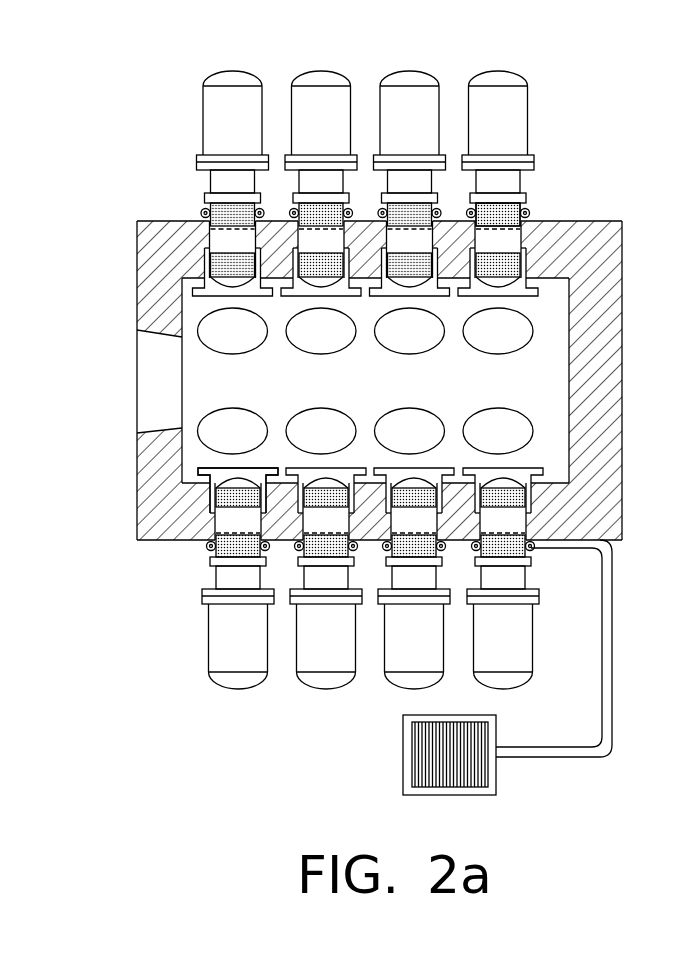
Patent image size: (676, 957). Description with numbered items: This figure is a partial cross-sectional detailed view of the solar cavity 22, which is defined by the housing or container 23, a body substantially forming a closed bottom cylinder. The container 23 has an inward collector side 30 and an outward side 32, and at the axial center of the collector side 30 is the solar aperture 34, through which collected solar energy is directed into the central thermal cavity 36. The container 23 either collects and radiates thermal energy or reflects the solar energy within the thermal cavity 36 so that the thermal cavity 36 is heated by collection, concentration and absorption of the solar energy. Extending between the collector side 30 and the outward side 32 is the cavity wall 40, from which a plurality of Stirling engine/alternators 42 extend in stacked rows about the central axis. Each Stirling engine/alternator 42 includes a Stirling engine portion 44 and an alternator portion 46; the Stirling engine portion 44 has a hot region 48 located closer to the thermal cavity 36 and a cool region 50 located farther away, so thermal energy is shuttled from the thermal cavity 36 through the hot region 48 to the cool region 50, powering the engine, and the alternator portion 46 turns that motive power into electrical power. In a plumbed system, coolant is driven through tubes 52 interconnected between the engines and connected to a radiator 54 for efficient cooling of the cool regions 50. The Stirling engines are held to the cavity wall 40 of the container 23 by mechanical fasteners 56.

The cavity 22 is at (337, 347).
The container 23 is at (563, 237).
The collector side 30 is at (137, 274).
The outward side 32 is at (622, 218).
The solar aperture 34 is at (164, 432).
The thermal cavity 36 is at (314, 396).
The cavity wall 40 is at (176, 235).
The Stirling engine/alternator 42 is at (183, 81).
The Stirling engine portion 44 is at (539, 185).
The alternator portion 46 is at (351, 100).
The hot region 48 is at (405, 263).
The cool region 50 is at (506, 207).
The tubes 52 is at (205, 548).
The radiator 54 is at (428, 797).
The mechanical fasteners 56 is at (198, 468).